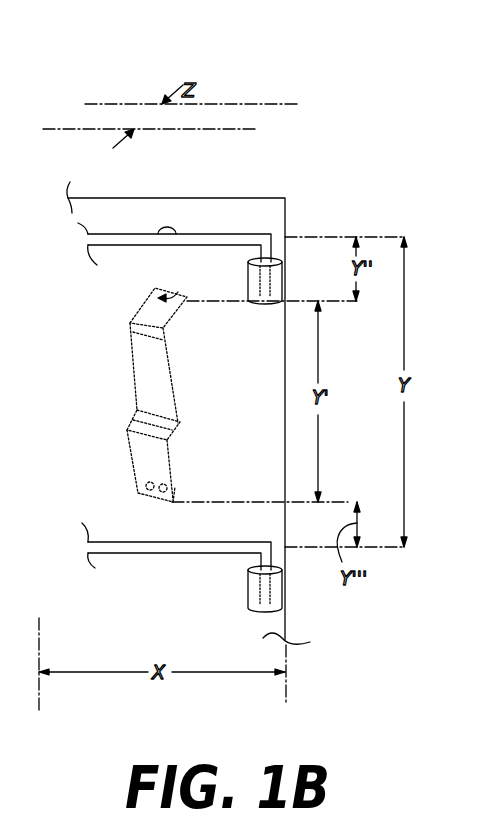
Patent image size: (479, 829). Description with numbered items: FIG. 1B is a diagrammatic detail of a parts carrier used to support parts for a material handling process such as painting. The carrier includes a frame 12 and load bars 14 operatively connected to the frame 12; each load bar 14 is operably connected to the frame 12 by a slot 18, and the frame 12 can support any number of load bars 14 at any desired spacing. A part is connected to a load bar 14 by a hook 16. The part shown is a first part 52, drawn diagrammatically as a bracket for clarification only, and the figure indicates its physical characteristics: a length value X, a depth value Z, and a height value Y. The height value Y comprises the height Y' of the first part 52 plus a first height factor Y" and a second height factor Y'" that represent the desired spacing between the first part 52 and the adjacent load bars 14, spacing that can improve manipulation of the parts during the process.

The frame 12 is at (127, 197).
The load bar 14 is at (113, 234).
The hook 16 is at (175, 234).
The slot 18 is at (263, 303).
The first part 52 is at (130, 392).